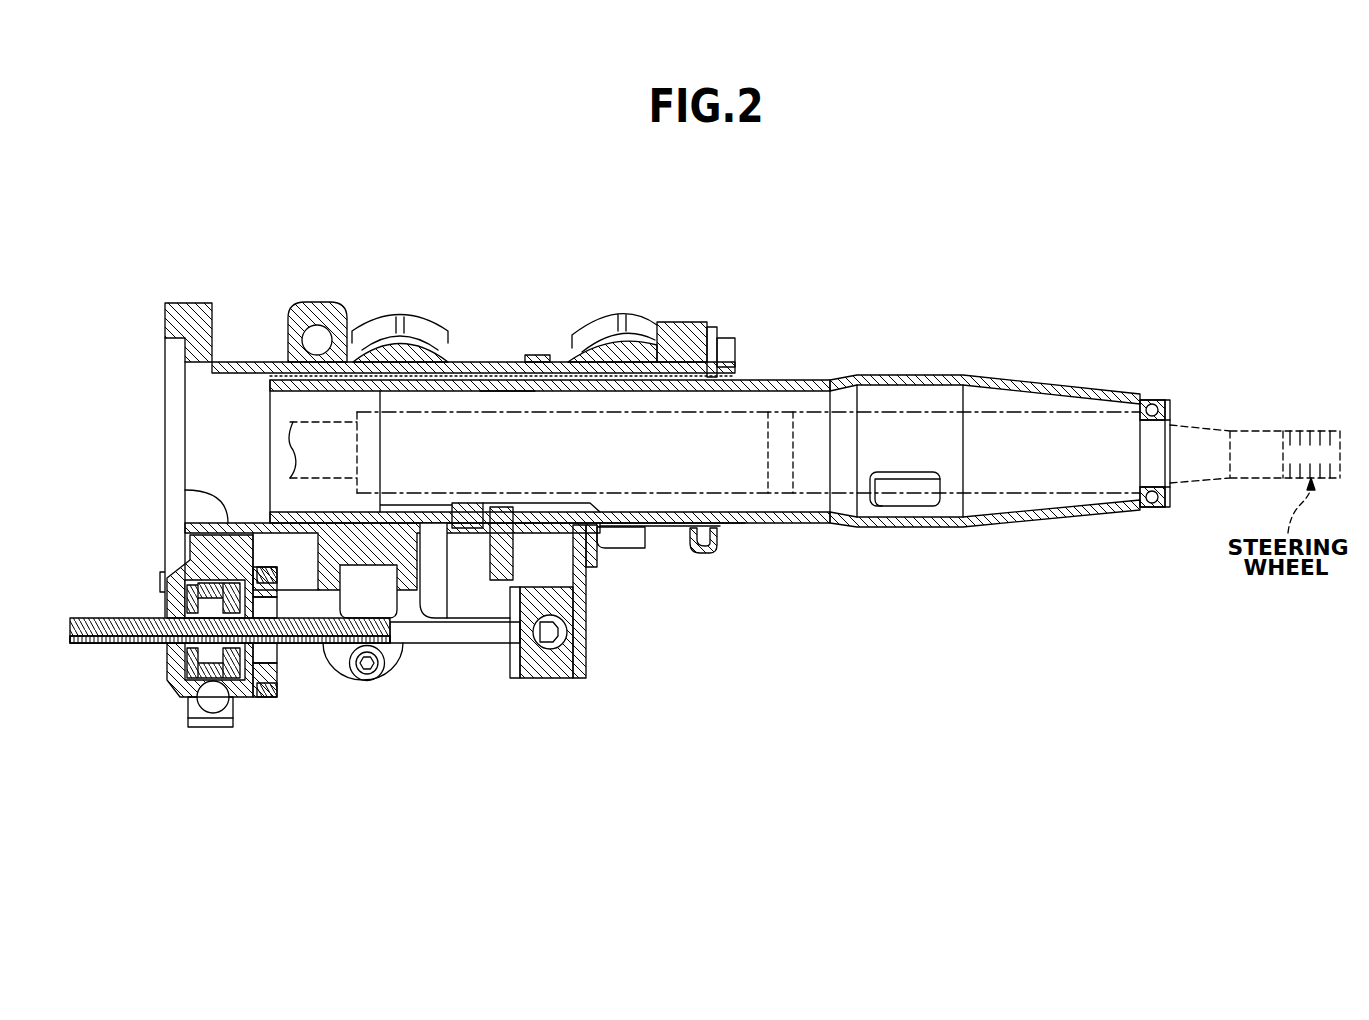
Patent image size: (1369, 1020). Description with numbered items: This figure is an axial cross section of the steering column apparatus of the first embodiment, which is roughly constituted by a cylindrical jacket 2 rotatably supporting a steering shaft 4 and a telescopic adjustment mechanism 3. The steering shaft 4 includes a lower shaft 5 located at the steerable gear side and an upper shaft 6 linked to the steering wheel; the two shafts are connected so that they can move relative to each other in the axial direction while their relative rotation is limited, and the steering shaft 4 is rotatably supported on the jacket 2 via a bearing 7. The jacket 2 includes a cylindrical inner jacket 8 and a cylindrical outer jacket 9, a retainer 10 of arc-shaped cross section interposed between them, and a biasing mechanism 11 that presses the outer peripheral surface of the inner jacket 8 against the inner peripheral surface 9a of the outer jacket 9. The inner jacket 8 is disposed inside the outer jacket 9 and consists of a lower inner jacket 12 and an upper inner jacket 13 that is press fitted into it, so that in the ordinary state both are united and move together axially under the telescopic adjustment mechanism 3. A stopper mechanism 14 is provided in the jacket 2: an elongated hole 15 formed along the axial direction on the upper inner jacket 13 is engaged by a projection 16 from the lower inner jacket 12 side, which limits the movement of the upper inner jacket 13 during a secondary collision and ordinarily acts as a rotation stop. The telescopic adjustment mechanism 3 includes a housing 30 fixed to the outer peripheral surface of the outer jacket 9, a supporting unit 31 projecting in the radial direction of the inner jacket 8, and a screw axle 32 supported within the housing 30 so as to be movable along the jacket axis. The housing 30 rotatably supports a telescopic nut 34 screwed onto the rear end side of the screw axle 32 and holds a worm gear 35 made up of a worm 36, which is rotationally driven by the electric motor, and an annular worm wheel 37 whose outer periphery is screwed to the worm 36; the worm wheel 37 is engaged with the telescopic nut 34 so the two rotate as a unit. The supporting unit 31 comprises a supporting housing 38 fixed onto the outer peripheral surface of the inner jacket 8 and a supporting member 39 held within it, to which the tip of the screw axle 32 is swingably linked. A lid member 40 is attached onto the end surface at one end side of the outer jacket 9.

The jacket 2 is at (614, 417).
The telescopic adjustment mechanism 3 is at (225, 666).
The steering shaft 4 is at (789, 354).
The lower shaft 5 is at (300, 447).
The upper shaft 6 is at (373, 430).
The bearing 7 is at (1153, 405).
The inner jacket 8 is at (705, 359).
The outer jacket 9 is at (687, 346).
The inner peripheral surface 9a is at (230, 520).
The retainer 10 is at (506, 390).
The biasing mechanism 11 is at (402, 300).
The lower inner jacket 12 is at (764, 380).
The upper inner jacket 13 is at (870, 376).
The stopper mechanism 14 is at (520, 388).
The elongated hole 15 is at (503, 507).
The projection 16 is at (462, 503).
The housing 30 is at (178, 572).
The supporting unit 31 is at (552, 601).
The screw axle 32 is at (86, 648).
The telescopic nut 34 is at (175, 612).
The worm gear 35 is at (273, 740).
The worm 36 is at (233, 703).
The worm wheel 37 is at (237, 700).
The supporting housing 38 is at (663, 678).
The supporting member 39 is at (567, 660).
The lid member 40 is at (713, 543).